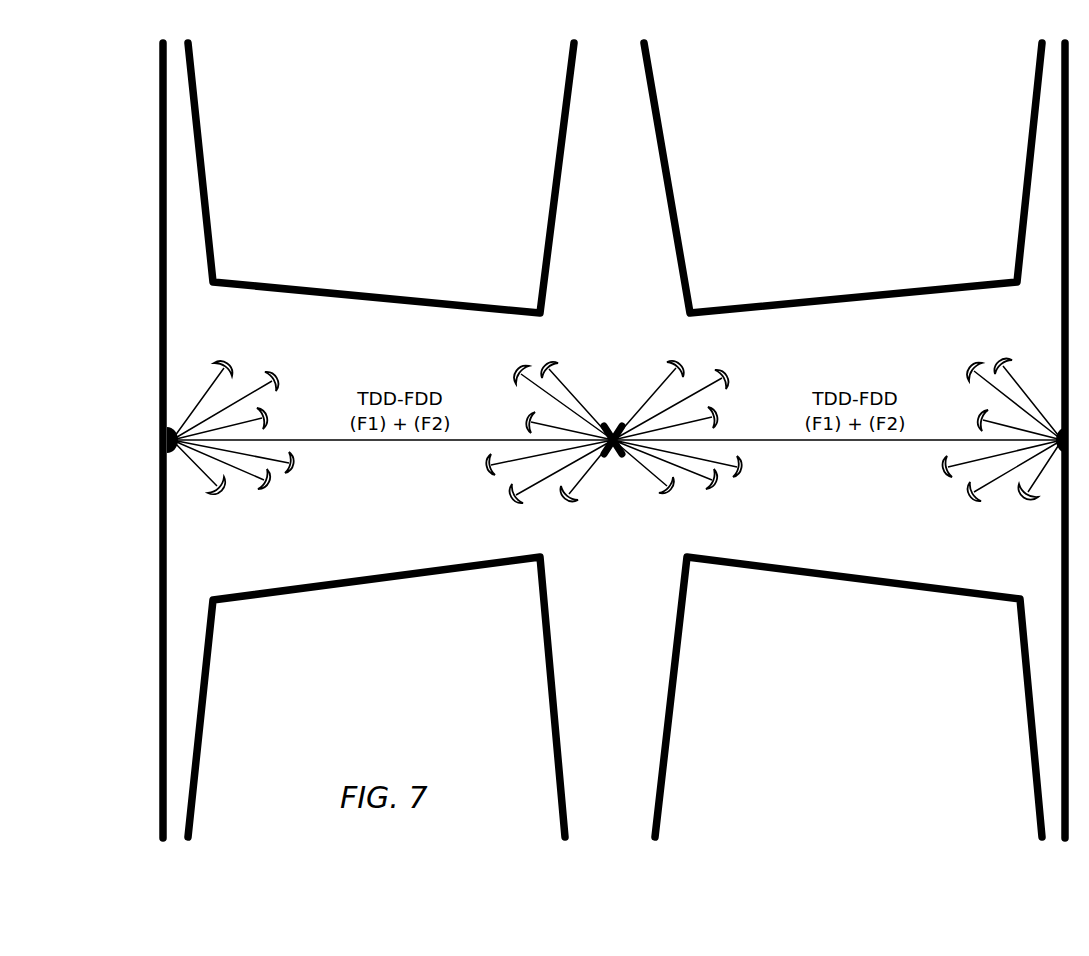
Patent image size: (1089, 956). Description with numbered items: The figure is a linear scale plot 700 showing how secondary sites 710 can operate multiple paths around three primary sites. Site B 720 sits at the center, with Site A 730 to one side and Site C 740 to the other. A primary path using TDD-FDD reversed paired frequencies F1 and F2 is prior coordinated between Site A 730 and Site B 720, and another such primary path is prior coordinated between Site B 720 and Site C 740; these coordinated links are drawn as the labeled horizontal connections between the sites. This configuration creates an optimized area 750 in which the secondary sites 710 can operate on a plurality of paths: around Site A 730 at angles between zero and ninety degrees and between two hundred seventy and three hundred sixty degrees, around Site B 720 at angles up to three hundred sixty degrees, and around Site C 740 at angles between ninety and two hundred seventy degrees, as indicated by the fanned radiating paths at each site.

The linear scale plot 700 is at (365, 107).
The secondary sites 710 is at (975, 500).
The Site B 720 is at (618, 450).
The Site A 730 is at (176, 436).
The Site C 740 is at (1058, 436).
The optimized area 750 is at (374, 580).